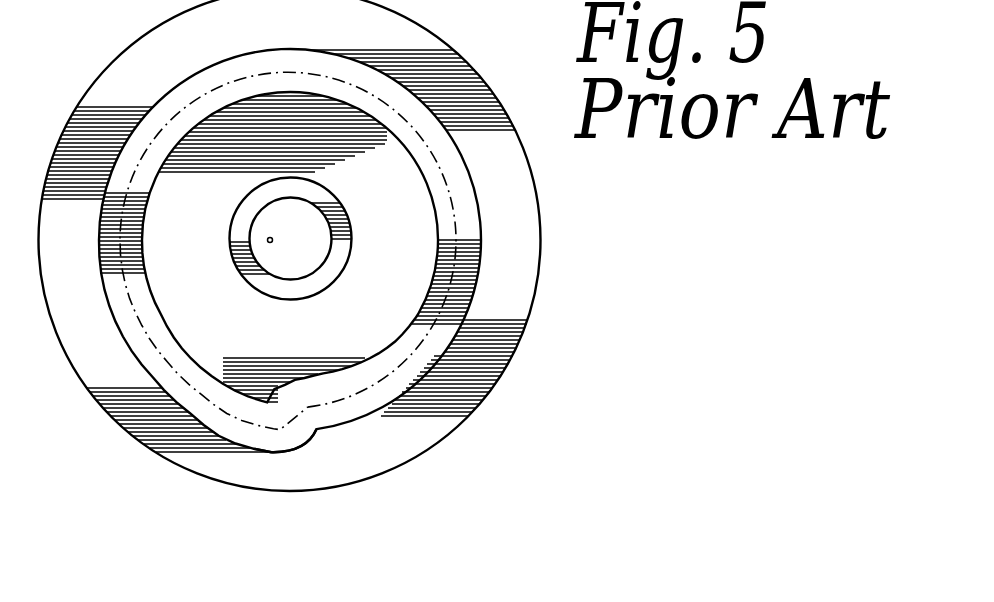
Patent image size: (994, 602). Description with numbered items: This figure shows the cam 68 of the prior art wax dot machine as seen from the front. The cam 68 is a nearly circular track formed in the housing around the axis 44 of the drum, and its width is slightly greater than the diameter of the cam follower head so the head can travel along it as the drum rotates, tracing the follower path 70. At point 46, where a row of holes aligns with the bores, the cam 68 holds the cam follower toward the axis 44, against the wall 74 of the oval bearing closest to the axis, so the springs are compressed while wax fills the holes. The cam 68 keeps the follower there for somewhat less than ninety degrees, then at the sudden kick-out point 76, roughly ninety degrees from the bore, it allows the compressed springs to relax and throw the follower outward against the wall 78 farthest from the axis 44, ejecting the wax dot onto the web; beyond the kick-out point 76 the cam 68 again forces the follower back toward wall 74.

The axis 44 is at (310, 253).
The point 46 is at (463, 236).
The cam 68 is at (374, 299).
The follower path 70 is at (172, 117).
The wall 74 is at (160, 313).
The kick-out point 76 is at (293, 433).
The wall 78 is at (262, 450).